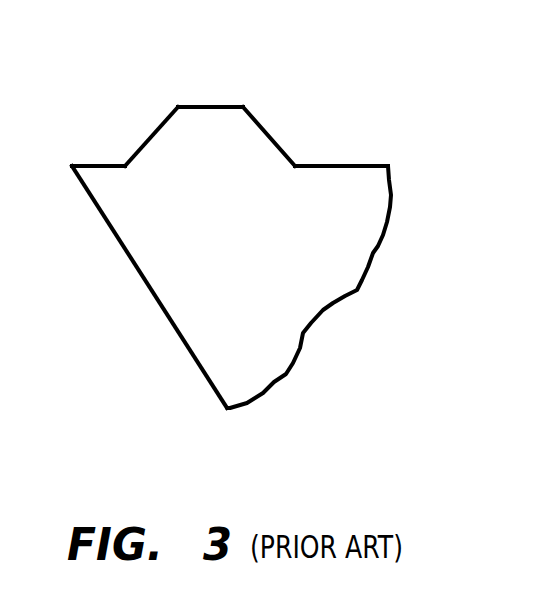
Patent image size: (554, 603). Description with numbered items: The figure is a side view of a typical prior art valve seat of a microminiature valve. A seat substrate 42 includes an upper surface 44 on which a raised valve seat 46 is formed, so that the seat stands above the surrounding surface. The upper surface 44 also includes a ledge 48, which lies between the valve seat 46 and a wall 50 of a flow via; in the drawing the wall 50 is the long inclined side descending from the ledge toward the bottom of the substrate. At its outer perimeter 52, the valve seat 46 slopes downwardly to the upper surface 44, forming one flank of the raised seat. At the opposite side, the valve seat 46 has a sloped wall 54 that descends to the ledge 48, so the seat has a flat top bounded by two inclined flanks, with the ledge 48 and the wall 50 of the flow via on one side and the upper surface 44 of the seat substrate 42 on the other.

The seat substrate 42 is at (313, 251).
The upper surface 44 is at (343, 166).
The raised valve seat 46 is at (218, 150).
The ledge 48 is at (97, 166).
The wall of flow via 50 is at (157, 302).
The outer perimeter 52 is at (243, 107).
The sloped wall 54 is at (150, 135).